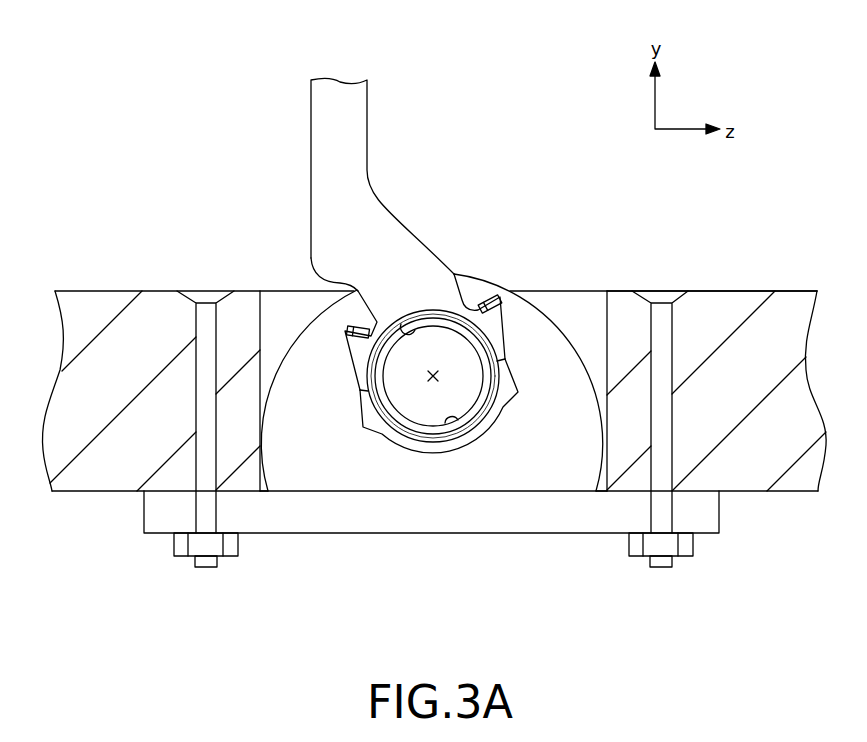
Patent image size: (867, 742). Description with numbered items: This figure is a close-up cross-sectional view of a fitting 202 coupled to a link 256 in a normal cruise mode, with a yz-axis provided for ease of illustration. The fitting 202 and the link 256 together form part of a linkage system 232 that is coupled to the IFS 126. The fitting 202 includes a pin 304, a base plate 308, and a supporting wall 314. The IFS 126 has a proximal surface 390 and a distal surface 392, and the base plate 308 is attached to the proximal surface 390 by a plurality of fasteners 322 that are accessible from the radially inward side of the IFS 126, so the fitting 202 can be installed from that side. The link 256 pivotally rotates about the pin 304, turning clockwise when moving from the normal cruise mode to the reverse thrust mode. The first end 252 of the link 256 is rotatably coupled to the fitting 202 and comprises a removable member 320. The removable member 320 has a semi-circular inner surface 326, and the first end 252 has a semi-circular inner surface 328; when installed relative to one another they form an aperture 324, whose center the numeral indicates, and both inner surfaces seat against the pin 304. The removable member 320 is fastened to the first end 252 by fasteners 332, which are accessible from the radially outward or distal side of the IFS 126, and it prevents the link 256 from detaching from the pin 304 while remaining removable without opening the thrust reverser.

The IFS 126 is at (71, 492).
The fitting 202 is at (315, 602).
The linkage system 232 is at (480, 83).
The first end 252 is at (331, 335).
The link 256 is at (318, 130).
The pin 304 is at (453, 276).
The base plate 308 is at (521, 520).
The wall 314 is at (541, 308).
The removable member 320 is at (402, 449).
The fasteners 322 is at (207, 582).
The aperture 324 is at (437, 380).
The inner surface 326 is at (453, 417).
The inner surface 328 is at (407, 328).
The fasteners 332 is at (337, 312).
The proximal surface 390 is at (781, 492).
The distal surface 392 is at (788, 291).